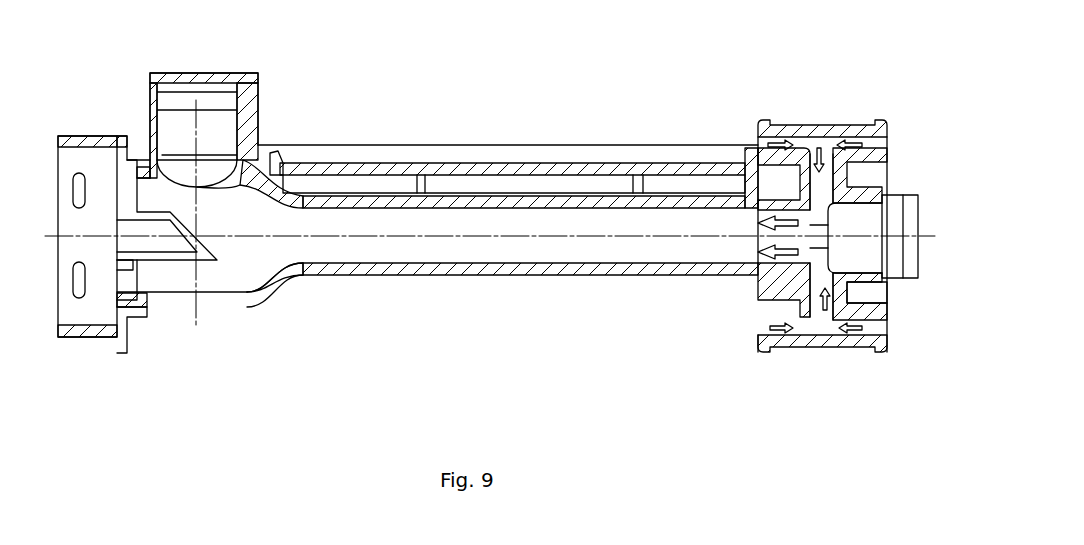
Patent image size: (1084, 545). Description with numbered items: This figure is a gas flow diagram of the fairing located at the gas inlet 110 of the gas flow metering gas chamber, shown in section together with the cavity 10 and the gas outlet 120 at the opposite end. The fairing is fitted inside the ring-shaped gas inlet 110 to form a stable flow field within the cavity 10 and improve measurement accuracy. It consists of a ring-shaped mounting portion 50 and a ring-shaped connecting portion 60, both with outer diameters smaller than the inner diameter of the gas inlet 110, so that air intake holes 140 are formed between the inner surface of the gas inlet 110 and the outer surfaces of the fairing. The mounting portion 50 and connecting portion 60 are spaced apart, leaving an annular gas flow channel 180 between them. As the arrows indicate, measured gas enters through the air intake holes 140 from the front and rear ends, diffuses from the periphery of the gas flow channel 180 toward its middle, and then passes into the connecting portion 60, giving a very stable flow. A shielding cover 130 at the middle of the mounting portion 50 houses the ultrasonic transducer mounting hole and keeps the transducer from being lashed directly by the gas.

The cavity 10 is at (485, 272).
The mounting portion 50 is at (870, 195).
The connecting portion 60 is at (772, 157).
The gas inlet 110 is at (852, 130).
The gas outlet 120 is at (232, 270).
The shielding cover 130 is at (838, 300).
The air intake hole 140 is at (848, 328).
The gas flow channel 180 is at (822, 190).